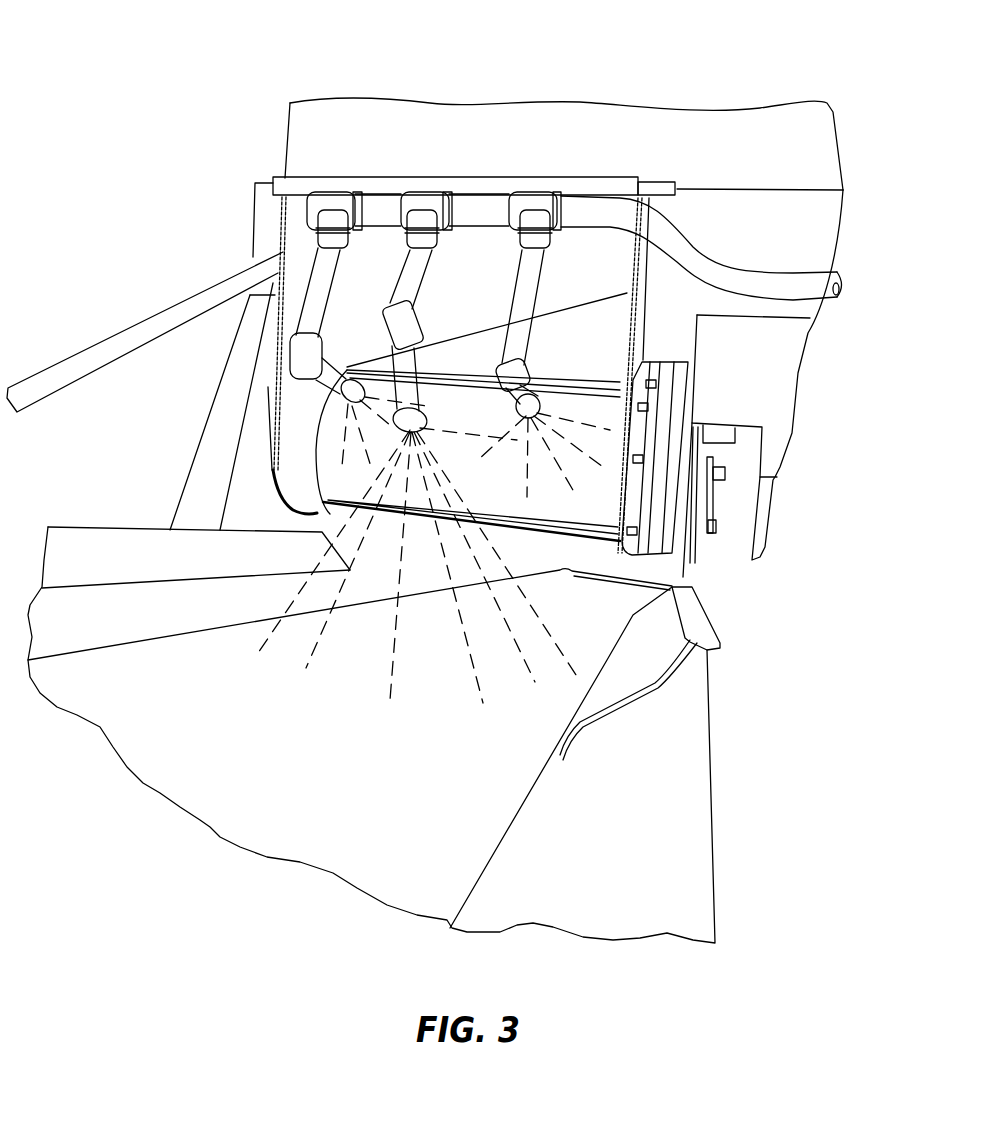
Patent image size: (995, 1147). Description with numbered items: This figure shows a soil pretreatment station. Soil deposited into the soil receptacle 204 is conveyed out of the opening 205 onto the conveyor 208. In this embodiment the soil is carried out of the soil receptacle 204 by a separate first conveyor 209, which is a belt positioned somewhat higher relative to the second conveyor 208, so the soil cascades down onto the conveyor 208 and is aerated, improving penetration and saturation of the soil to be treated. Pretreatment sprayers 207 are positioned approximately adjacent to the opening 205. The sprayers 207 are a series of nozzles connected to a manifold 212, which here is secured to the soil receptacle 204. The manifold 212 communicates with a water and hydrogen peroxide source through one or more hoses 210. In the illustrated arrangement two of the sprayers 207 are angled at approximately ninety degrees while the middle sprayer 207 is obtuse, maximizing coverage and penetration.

The soil receptacle 204 is at (779, 163).
The opening 205 is at (606, 320).
The pretreatment sprayers 207 is at (527, 273).
The conveyor 208 is at (348, 748).
The first conveyor 209 is at (333, 428).
The hoses 210 is at (708, 258).
The manifold 212 is at (348, 178).